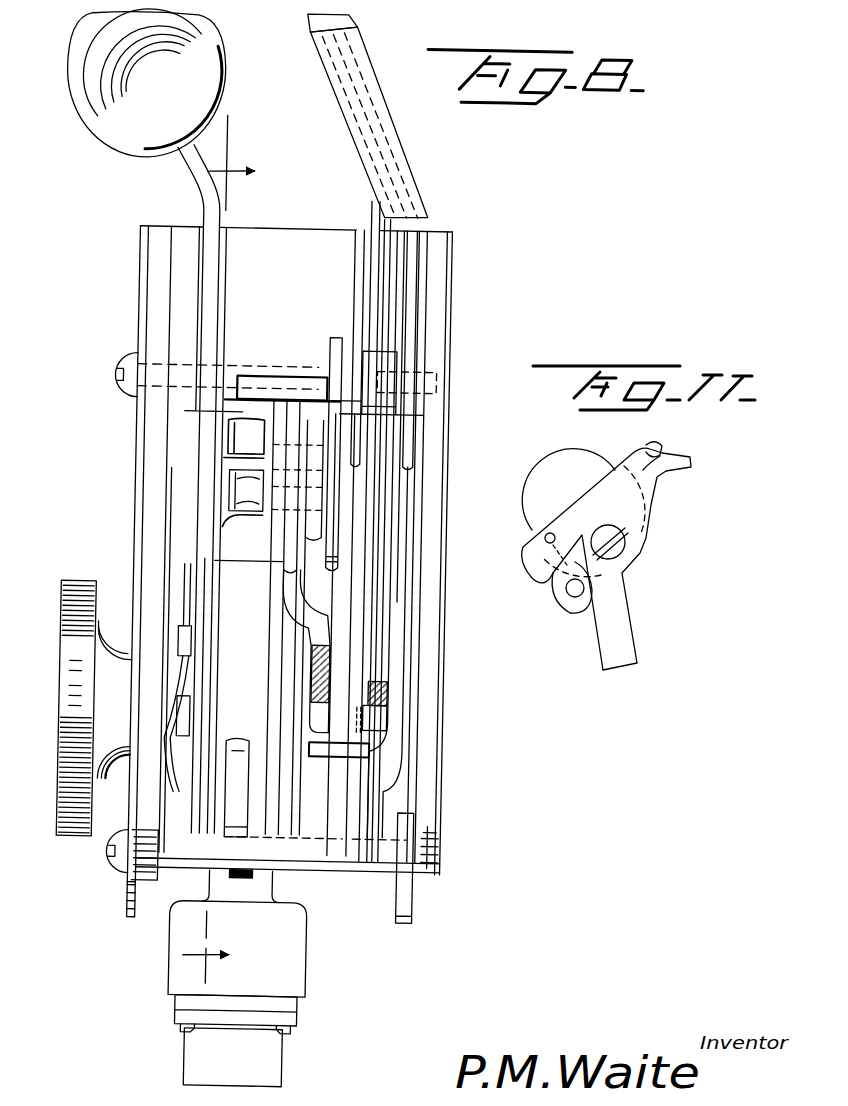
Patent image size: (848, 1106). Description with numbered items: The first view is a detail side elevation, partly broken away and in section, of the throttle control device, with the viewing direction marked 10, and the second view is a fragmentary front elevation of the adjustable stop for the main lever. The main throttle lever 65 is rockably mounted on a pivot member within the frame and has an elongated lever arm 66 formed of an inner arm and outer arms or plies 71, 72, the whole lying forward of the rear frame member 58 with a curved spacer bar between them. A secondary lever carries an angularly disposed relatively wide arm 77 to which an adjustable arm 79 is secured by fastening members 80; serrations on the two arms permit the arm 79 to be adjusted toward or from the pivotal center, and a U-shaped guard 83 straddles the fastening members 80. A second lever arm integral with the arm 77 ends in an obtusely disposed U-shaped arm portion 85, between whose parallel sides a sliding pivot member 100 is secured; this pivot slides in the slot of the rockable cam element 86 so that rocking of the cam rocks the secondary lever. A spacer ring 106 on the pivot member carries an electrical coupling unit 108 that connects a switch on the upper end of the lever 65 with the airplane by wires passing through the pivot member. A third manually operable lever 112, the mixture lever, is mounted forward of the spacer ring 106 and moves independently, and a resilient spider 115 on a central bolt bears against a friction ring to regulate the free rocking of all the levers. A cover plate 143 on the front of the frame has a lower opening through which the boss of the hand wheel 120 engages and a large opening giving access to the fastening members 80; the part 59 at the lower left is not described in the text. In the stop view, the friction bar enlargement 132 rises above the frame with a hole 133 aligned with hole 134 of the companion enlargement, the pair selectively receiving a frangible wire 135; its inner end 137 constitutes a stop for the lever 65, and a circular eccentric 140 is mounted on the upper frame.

In FIG. 8, the section line 10 is at (236, 550).
In FIG. 8, the third manually operable lever 112 is at (200, 197).
In FIG. 8, the elongated lever arm 66 is at (372, 137).
In FIG. 8, the main throttle lever 65 is at (362, 201).
In FIG. 8, the rear frame member 58 is at (432, 259).
In FIG. 8, the cover plate 143 is at (132, 418).
In FIG. 8, the U-shaped guard 83 is at (226, 459).
In FIG. 8, the fastening members 80 is at (252, 503).
In FIG. 8, the adjustable arm 79 is at (278, 525).
In FIG. 8, the hand wheel 120 is at (70, 618).
In FIG. 8, the resilient spider 115 is at (176, 618).
In FIG. 8, the spacer ring 106 is at (322, 544).
In FIG. 8, the outer arm 72 is at (296, 471).
In FIG. 8, the wide arm 77 is at (339, 483).
In FIG. 8, the outer arm 71 is at (390, 535).
In FIG. 8, the rockable cam element 86 is at (345, 584).
In FIG. 8, the sliding pivot member 100 is at (378, 713).
In FIG. 8, the U-shaped arm portion 85 is at (274, 808).
In FIG. 8, the shaft 59 is at (132, 876).
In FIG. 8, the electrical coupling unit 108 is at (300, 975).
In FIG. 11, the circular eccentric 140 is at (582, 460).
In FIG. 11, the aligned hole 133 is at (575, 592).
In FIG. 11, the frangible wire 135 is at (662, 450).
In FIG. 11, the inner end 137 is at (660, 457).
In FIG. 11, the aligned hole 134 is at (546, 542).
In FIG. 11, the enlargement 132 is at (537, 577).